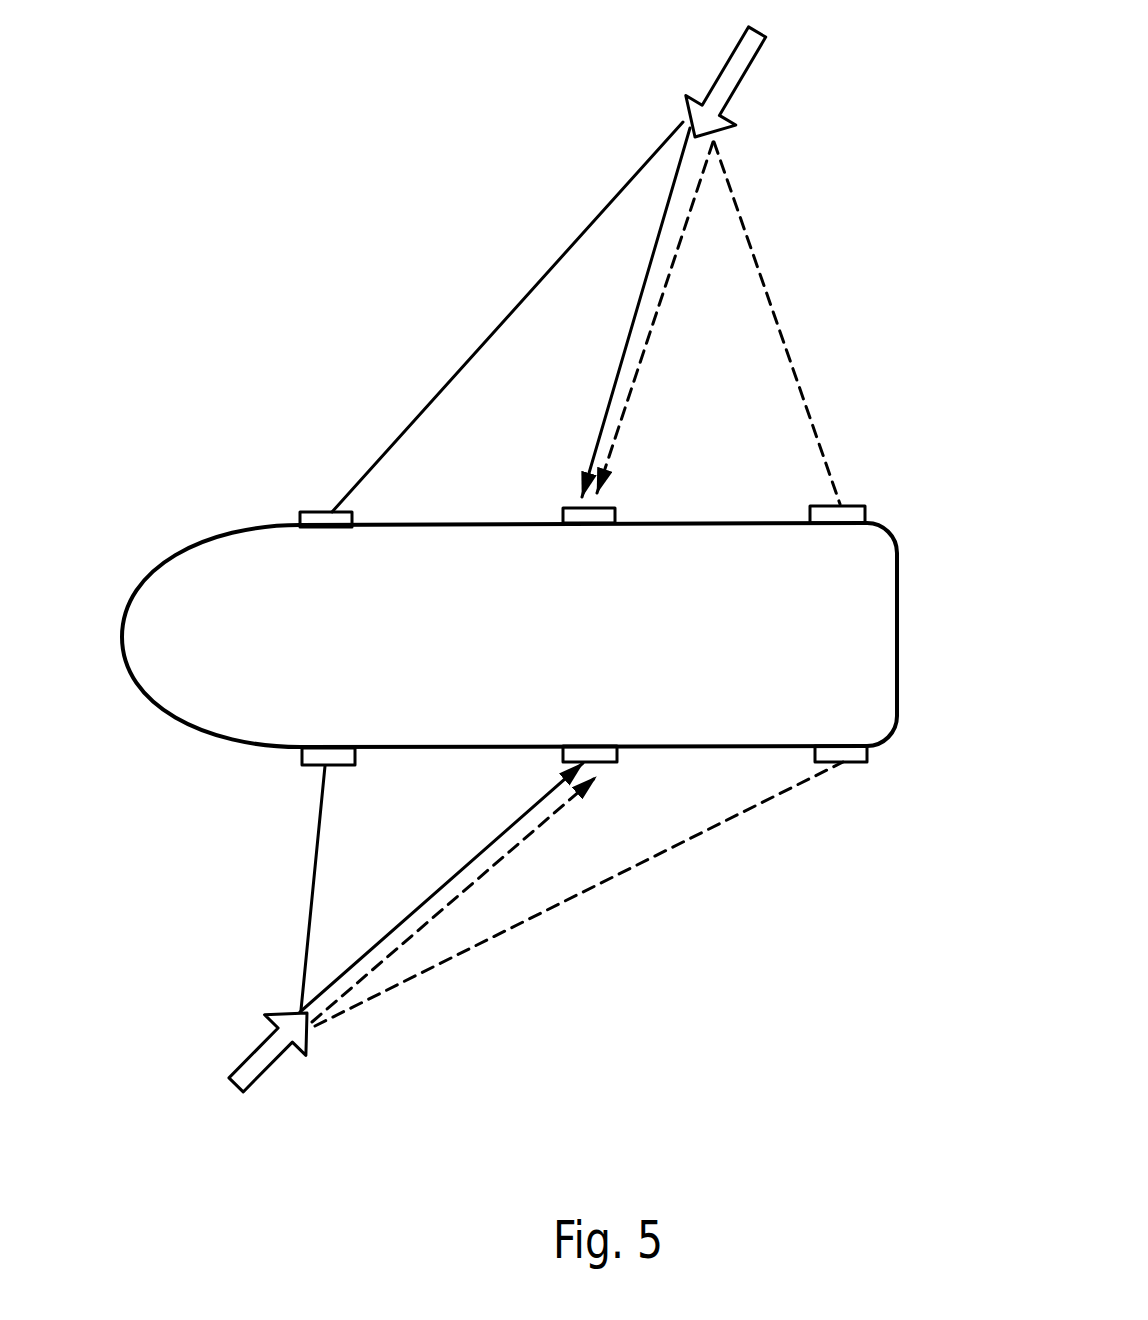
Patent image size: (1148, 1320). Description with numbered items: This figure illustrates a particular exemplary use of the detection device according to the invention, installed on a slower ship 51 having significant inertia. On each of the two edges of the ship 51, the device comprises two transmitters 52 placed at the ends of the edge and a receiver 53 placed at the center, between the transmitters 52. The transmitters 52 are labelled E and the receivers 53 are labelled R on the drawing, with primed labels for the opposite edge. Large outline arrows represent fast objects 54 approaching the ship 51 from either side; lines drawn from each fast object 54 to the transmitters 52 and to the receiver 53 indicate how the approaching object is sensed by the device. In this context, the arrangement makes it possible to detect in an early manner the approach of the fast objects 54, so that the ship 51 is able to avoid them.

The ship 51 is at (172, 585).
The transmitters 52 is at (313, 517).
The receiver 53 is at (608, 508).
The fast objects 54 is at (747, 73).